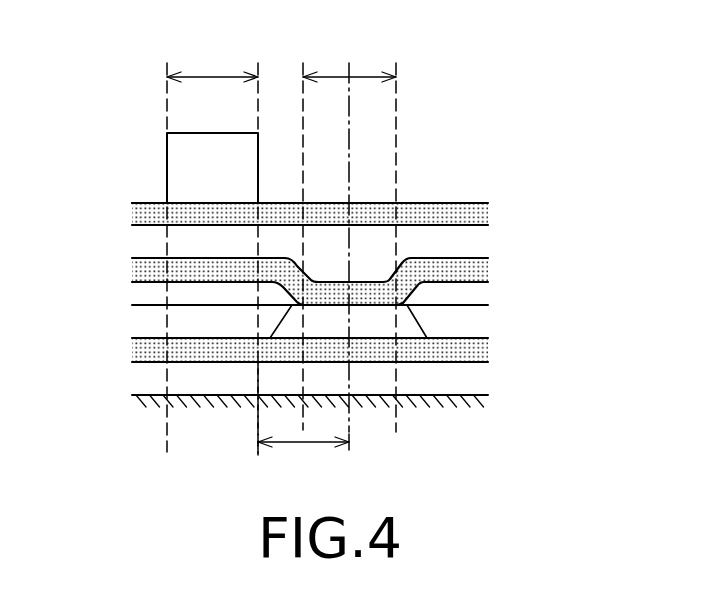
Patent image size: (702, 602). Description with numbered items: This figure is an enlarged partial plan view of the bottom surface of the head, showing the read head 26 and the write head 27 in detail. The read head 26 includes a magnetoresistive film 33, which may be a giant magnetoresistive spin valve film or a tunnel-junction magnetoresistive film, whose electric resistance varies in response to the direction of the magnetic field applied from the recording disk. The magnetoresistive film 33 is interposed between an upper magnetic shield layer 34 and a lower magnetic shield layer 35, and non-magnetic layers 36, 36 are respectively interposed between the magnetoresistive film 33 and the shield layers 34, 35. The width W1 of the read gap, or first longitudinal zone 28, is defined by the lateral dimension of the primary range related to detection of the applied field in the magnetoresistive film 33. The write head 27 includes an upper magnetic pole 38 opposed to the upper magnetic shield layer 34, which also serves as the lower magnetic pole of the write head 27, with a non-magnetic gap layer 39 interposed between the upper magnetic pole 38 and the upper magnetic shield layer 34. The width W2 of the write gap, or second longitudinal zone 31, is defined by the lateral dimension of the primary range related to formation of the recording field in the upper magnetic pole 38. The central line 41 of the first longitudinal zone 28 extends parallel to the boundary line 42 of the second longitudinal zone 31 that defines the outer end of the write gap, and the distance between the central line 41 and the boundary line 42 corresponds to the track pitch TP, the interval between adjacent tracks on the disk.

The read head 26 is at (533, 293).
The write head 27 is at (126, 114).
The first longitudinal zone 28 is at (396, 108).
The second longitudinal zone 31 is at (258, 107).
The magnetoresistive film 33 is at (407, 325).
The upper magnetic shield layer 34 is at (438, 238).
The lower magnetic shield layer 35 is at (442, 380).
The non-magnetic layers 36 is at (453, 263).
The upper magnetic pole 38 is at (180, 148).
The non-magnetic gap layer 39 is at (152, 203).
The central line 41 is at (349, 437).
The boundary line 42 is at (257, 427).
The width of the read gap W1 is at (349, 54).
The width of the write gap W2 is at (212, 56).
The track pitch TP is at (303, 464).